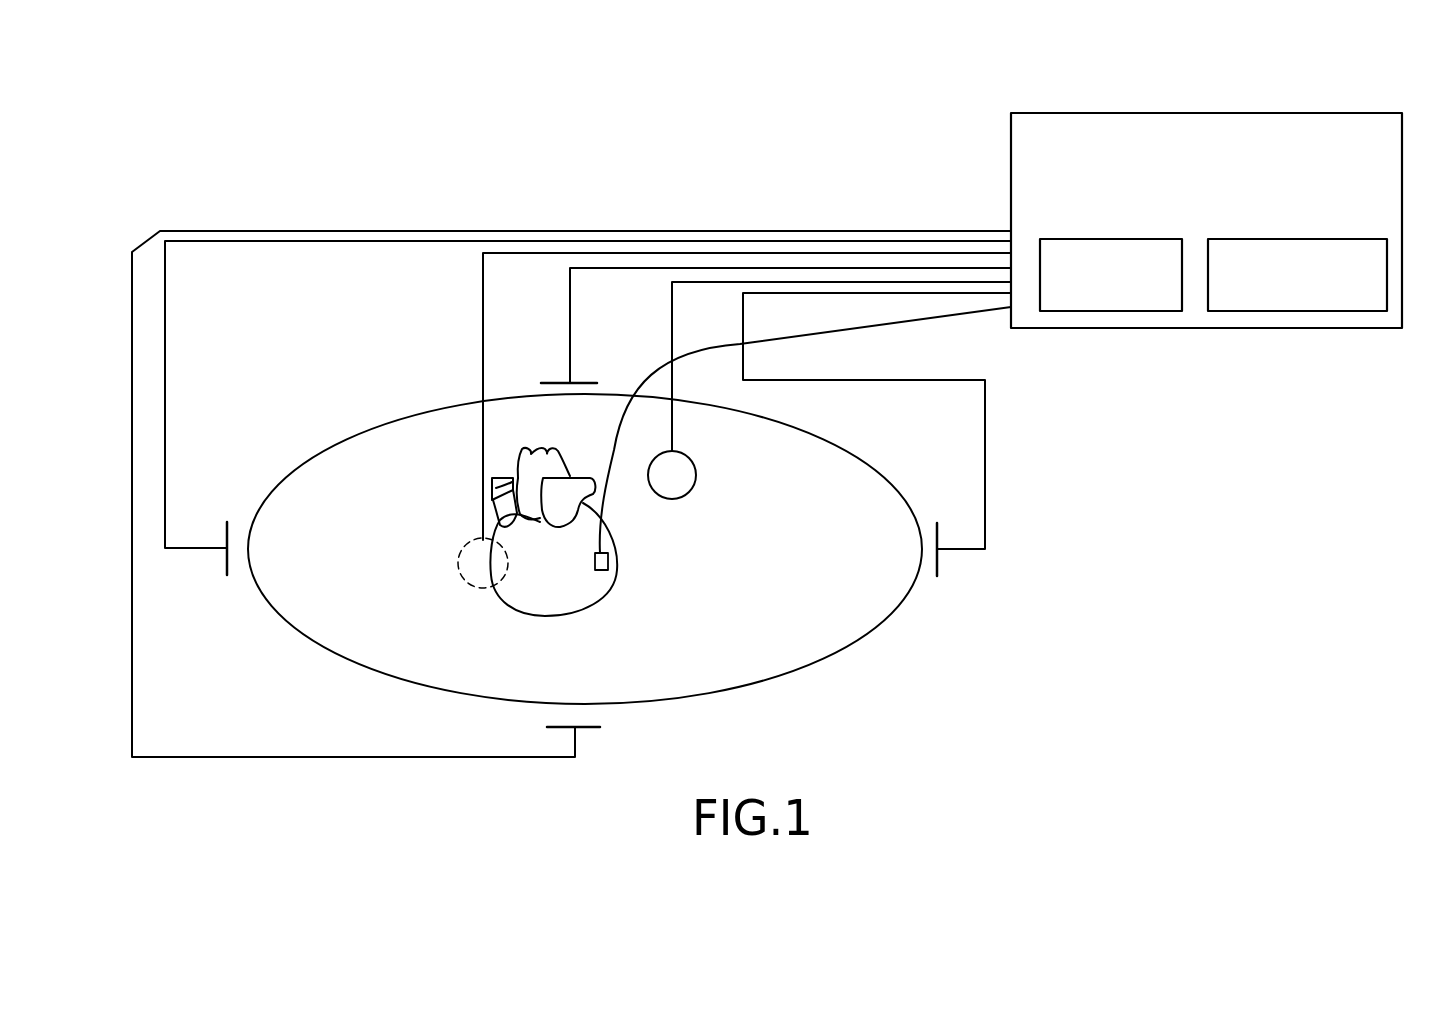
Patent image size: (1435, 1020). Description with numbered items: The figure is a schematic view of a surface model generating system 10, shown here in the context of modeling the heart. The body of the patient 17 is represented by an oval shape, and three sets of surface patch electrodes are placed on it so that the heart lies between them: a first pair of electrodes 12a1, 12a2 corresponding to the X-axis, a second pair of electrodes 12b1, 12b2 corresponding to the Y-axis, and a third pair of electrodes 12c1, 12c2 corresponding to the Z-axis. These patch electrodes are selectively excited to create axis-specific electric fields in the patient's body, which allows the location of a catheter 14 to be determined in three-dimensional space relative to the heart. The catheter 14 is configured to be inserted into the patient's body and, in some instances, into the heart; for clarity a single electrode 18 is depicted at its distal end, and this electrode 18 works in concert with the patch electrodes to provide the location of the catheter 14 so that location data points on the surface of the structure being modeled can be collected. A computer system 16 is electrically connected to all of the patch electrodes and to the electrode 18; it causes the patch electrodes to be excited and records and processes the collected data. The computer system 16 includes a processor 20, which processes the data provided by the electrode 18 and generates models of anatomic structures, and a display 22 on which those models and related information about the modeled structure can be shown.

The surface model generating system 10 is at (219, 134).
The computer system 16 is at (1048, 113).
The display 22 is at (1125, 300).
The processor 20 is at (1303, 300).
The patient 17 is at (830, 441).
The surface patch electrode 12a1 is at (562, 381).
The surface patch electrode 12a2 is at (578, 735).
The surface patch electrode 12b1 is at (224, 565).
The surface patch electrode 12b2 is at (940, 565).
The surface patch electrode 12c1 is at (486, 590).
The surface patch electrode 12c2 is at (697, 462).
The catheter 14 is at (610, 483).
The electrode 18 is at (608, 573).